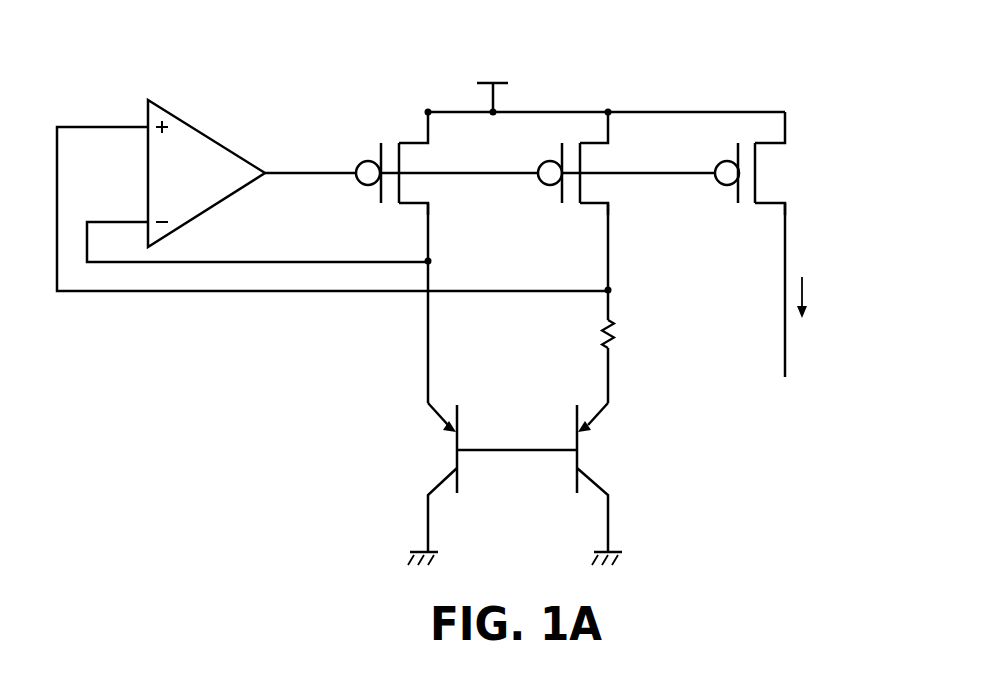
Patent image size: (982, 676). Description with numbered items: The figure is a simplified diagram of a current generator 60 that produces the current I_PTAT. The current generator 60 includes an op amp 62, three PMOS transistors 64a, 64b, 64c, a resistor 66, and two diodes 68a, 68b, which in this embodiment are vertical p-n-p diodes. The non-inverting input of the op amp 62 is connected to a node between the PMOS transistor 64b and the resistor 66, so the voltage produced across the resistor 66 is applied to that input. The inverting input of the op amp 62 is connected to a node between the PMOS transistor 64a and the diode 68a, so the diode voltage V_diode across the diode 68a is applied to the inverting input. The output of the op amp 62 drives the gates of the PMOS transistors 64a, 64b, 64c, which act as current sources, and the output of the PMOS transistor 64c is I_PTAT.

The current generator 60 is at (73, 22).
The op amp 62 is at (205, 126).
The PMOS transistor 64a is at (407, 126).
The PMOS transistor 64b is at (582, 125).
The PMOS transistor 64c is at (762, 125).
The resistor 66 is at (627, 348).
The diode 68a is at (429, 484).
The diode 68b is at (604, 484).